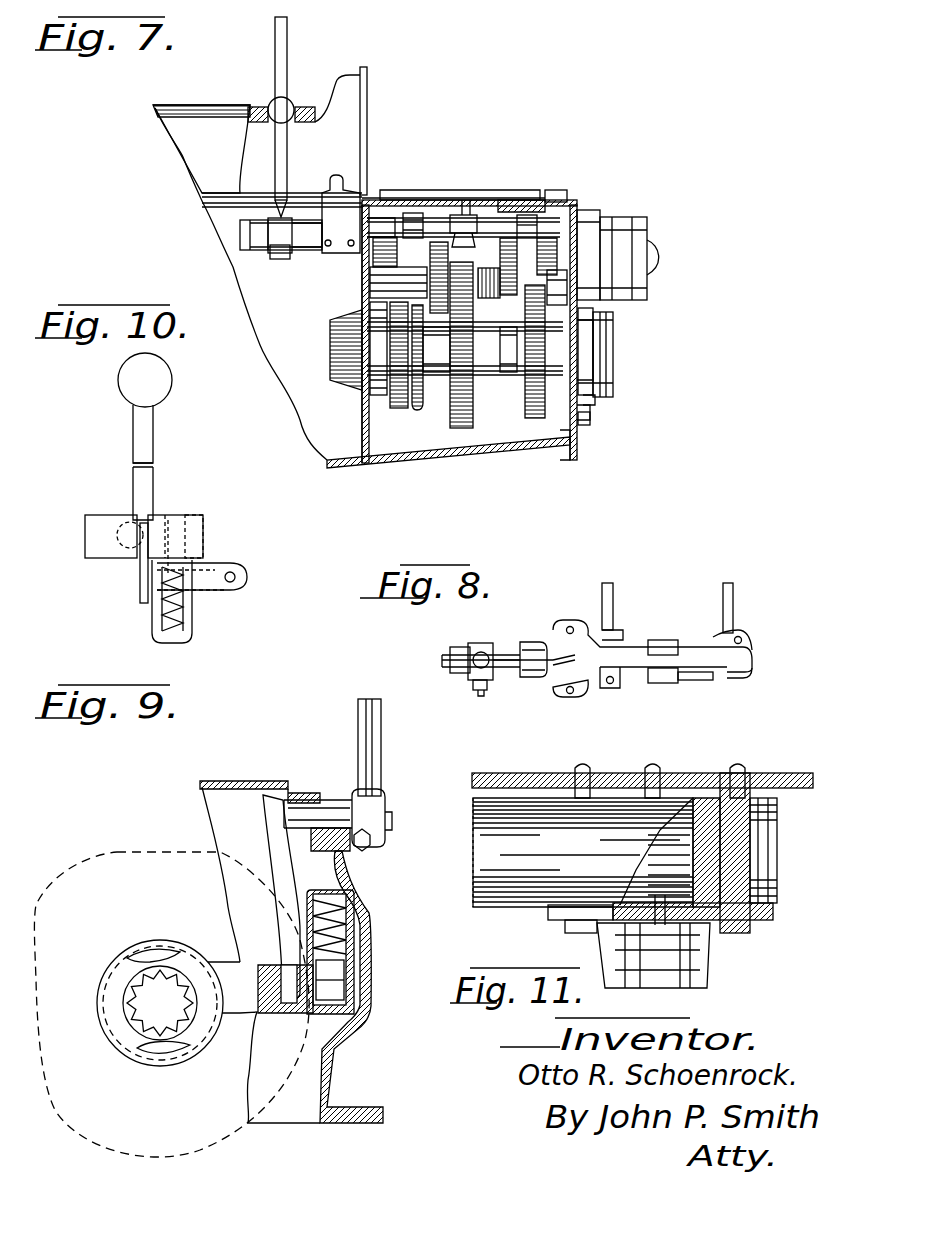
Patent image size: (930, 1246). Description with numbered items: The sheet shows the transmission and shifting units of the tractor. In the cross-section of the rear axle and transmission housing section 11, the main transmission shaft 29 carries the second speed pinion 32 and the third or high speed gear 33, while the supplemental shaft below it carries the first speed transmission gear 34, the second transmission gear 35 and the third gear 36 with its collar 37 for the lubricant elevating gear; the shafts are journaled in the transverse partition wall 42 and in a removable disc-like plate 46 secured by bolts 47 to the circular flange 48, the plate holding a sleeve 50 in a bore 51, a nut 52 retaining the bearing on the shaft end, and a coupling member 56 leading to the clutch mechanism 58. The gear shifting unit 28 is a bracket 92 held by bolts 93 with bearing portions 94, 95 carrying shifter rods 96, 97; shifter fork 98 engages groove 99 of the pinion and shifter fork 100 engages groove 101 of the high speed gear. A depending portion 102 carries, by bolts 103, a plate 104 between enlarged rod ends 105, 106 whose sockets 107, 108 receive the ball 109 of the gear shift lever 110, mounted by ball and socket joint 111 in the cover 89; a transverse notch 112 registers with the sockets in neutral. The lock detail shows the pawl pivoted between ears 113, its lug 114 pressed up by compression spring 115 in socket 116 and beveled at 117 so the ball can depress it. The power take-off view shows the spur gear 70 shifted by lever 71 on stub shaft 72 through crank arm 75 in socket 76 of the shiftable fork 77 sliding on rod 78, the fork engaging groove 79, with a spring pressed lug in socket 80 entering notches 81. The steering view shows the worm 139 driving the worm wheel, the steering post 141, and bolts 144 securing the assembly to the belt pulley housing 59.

In FIG. 7, the rear axle and transmission housing section 11 is at (560, 462).
In FIG. 7, the gear shifting unit 28 is at (475, 212).
In FIG. 8, the gear shifting unit 28 is at (590, 687).
In FIG. 7, the main transmission shaft 29 is at (585, 298).
In FIG. 7, the pinion 32 is at (508, 375).
In FIG. 7, the third or high speed gear 33 is at (388, 240).
In FIG. 7, the first speed transmission gear 34 is at (535, 418).
In FIG. 7, the second transmission gear 35 is at (590, 430).
In FIG. 7, the third gear 36 is at (398, 410).
In FIG. 7, the collar or bearing portion 37 is at (460, 428).
In FIG. 7, the transverse partition wall 42 is at (365, 425).
In FIG. 7, the removable disc-like plate 46 is at (592, 400).
In FIG. 7, the bolts 47 is at (590, 415).
In FIG. 7, the inwardly extending circular flange 48 is at (578, 450).
In FIG. 7, the sleeve 50 is at (598, 343).
In FIG. 7, the bore 51 is at (505, 300).
In FIG. 7, the nut 52 is at (540, 280).
In FIG. 7, the coupling member 56 is at (647, 228).
In FIG. 7, the clutch mechanism 58 is at (418, 410).
In FIG. 7, the belt pulley housing 59 is at (332, 352).
In FIG. 11, the belt pulley housing 59 is at (710, 775).
In FIG. 9, the spur gear 70 is at (118, 852).
In FIG. 9, the manually operable lever 71 is at (372, 750).
In FIG. 9, the stub shaft 72 is at (392, 815).
In FIG. 9, the depending crank arm 75 is at (278, 875).
In FIG. 9, the socket 76 is at (288, 1014).
In FIG. 9, the shiftable fork 77 is at (210, 945).
In FIG. 9, the longitudinal rod 78 is at (344, 972).
In FIG. 9, the peripheral groove 79 is at (354, 945).
In FIG. 9, the socket 80 is at (346, 905).
In FIG. 9, the notches 81 is at (360, 985).
In FIG. 7, the cover 89 is at (205, 112).
In FIG. 7, the bracket 92 is at (470, 225).
In FIG. 8, the bracket 92 is at (732, 675).
In FIG. 7, the bolts 93 is at (370, 200).
In FIG. 8, the bearing portion 94 is at (655, 683).
In FIG. 8, the bearing portion 95 is at (525, 678).
In FIG. 8, the gear shifter rod 96 is at (660, 640).
In FIG. 7, the gear shifter rod 97 is at (527, 217).
In FIG. 8, the gear shifter rod 97 is at (695, 682).
In FIG. 8, the shifter fork 98 is at (732, 628).
In FIG. 7, the peripheral groove 99 is at (593, 232).
In FIG. 7, the shifter fork 100 is at (380, 225).
In FIG. 8, the shifter fork 100 is at (610, 605).
In FIG. 7, the peripheral groove 101 is at (345, 278).
In FIG. 7, the depending portion 102 is at (323, 200).
In FIG. 7, the bolts 103 is at (323, 252).
In FIG. 8, the plate 104 is at (455, 660).
In FIG. 10, the enlarged portion 105 is at (98, 545).
In FIG. 8, the enlarged portion 105 is at (485, 645).
In FIG. 7, the enlarged portion 106 is at (235, 218).
In FIG. 10, the enlarged portion 106 is at (195, 530).
In FIG. 8, the enlarged portion 106 is at (490, 680).
In FIG. 8, the semi-circular socket 107 is at (545, 627).
In FIG. 10, the semi-circular socket 108 is at (197, 523).
In FIG. 8, the semi-circular socket 108 is at (475, 688).
In FIG. 7, the ball 109 is at (265, 248).
In FIG. 10, the ball 109 is at (125, 525).
In FIG. 7, the gear shift lever 110 is at (287, 28).
In FIG. 10, the gear shift lever 110 is at (133, 435).
In FIG. 7, the ball and socket joint 111 is at (290, 105).
In FIG. 8, the ball and socket joint 111 is at (481, 696).
In FIG. 10, the transverse notch 112 is at (240, 577).
In FIG. 8, the transverse notch 112 is at (475, 670).
In FIG. 10, the laterally extending ears 113 is at (200, 592).
In FIG. 10, the lug 114 is at (168, 525).
In FIG. 8, the lug 114 is at (480, 655).
In FIG. 10, the compression spring 115 is at (182, 610).
In FIG. 10, the socket 116 is at (170, 640).
In FIG. 10, the bevel 117 is at (145, 570).
In FIG. 11, the worm 139 is at (690, 875).
In FIG. 11, the steering post 141 is at (525, 905).
In FIG. 11, the bolts 144 is at (582, 933).